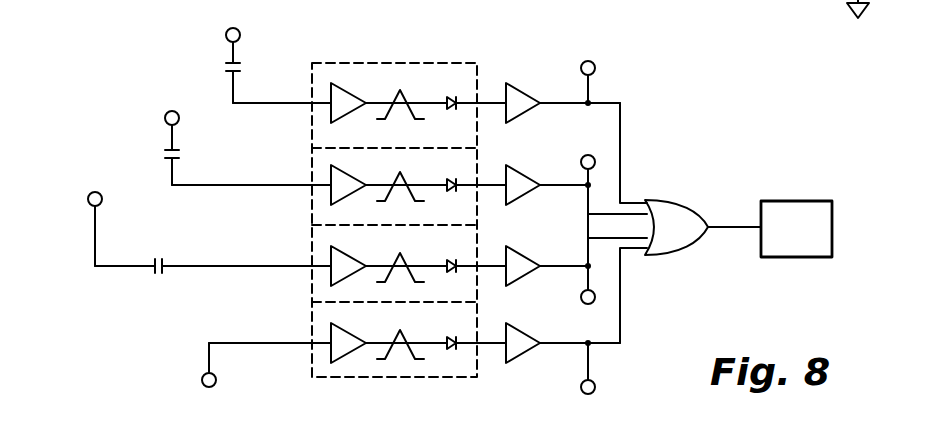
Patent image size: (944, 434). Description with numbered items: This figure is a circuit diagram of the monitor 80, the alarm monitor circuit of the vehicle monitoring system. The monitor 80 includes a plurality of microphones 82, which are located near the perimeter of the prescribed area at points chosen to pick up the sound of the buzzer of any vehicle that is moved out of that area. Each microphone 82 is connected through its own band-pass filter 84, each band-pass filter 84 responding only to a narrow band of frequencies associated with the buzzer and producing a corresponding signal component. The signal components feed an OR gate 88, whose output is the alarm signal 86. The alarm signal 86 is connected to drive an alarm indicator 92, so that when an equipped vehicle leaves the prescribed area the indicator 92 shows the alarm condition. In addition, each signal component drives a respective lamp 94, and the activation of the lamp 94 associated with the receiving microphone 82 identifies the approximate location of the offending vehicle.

The monitor 80 is at (487, 405).
The microphone 82 is at (198, 40).
The band-pass filter 84 is at (407, 63).
The alarm signal 86 is at (720, 229).
The OR gate 88 is at (672, 200).
The alarm indicator 92 is at (793, 201).
The lamp 94 is at (581, 68).